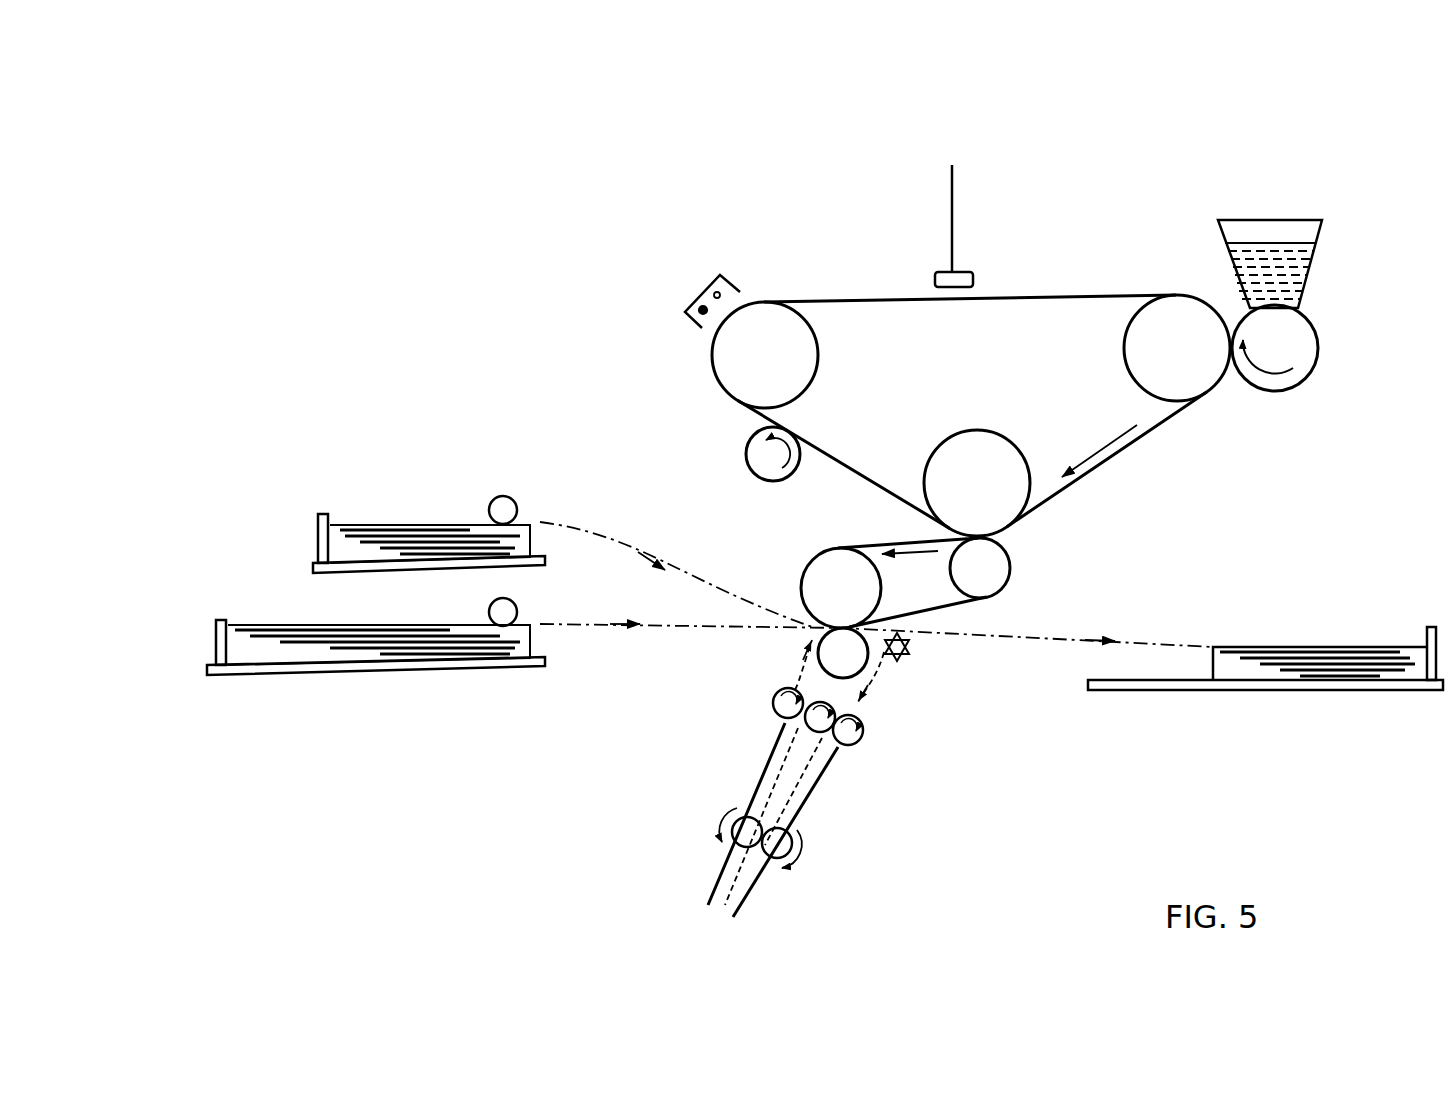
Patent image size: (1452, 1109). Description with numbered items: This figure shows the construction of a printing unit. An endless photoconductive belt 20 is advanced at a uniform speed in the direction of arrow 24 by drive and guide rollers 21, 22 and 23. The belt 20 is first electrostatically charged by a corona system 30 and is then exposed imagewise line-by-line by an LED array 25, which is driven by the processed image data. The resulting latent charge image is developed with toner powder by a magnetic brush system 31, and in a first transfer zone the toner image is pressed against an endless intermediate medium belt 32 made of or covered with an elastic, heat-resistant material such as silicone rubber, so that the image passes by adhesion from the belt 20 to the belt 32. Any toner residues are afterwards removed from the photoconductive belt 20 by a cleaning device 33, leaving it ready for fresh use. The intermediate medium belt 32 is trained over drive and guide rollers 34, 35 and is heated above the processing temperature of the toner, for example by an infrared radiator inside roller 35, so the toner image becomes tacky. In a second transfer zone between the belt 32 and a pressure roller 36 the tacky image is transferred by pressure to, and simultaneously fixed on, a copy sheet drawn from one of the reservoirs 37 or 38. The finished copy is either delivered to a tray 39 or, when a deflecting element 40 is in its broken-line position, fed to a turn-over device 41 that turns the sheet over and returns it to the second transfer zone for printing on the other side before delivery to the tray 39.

The photoconductive belt 20 is at (900, 296).
The drive and guide roller 21 is at (1135, 336).
The drive and guide roller 22 is at (977, 443).
The drive and guide roller 23 is at (818, 352).
The arrow 24 is at (1100, 447).
The LED array 25 is at (968, 273).
The corona system 30 is at (706, 292).
The magnetic brush system 31 is at (1300, 336).
The intermediate medium belt 32 is at (875, 548).
The cleaning device 33 is at (750, 447).
The drive and guide roller 34 is at (1000, 568).
The drive and guide roller 35 is at (820, 572).
The pressure roller 36 is at (838, 653).
The reservoir 37 is at (397, 513).
The reservoir 38 is at (280, 622).
The tray 39 is at (1315, 638).
The deflecting element 40 is at (905, 655).
The turn-over device 41 is at (818, 802).